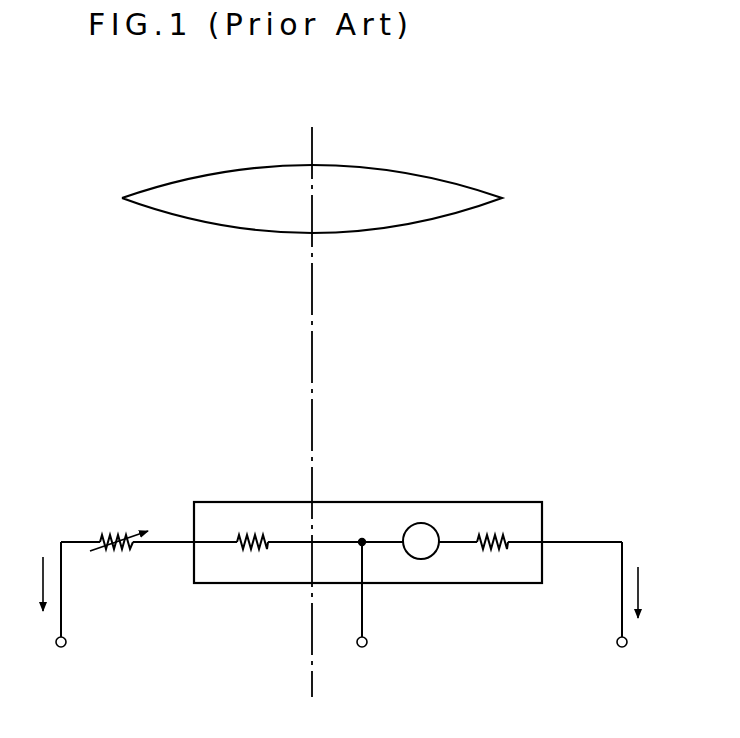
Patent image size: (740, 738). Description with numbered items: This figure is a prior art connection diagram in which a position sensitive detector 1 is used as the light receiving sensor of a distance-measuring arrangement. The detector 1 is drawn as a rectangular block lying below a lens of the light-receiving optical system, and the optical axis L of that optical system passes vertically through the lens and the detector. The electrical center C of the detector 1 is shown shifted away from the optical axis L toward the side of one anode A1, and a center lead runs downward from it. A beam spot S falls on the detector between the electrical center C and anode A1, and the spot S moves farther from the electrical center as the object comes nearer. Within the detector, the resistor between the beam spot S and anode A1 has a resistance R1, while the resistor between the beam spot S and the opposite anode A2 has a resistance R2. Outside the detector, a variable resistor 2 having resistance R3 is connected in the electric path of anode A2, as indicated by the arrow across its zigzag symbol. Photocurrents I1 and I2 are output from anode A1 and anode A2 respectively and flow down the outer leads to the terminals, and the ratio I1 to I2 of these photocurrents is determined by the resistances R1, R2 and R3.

The position sensitive detector 1 is at (492, 502).
The variable resistor 2 is at (103, 538).
The optical axis L is at (313, 321).
The electrical center C is at (362, 540).
The beam spot S is at (421, 523).
The anode A1 is at (542, 545).
The anode A2 is at (192, 548).
The resistance R1 is at (490, 561).
The resistance R2 is at (249, 561).
The resistance R3 is at (109, 561).
The photocurrent I1 is at (650, 592).
The photocurrent I2 is at (28, 584).